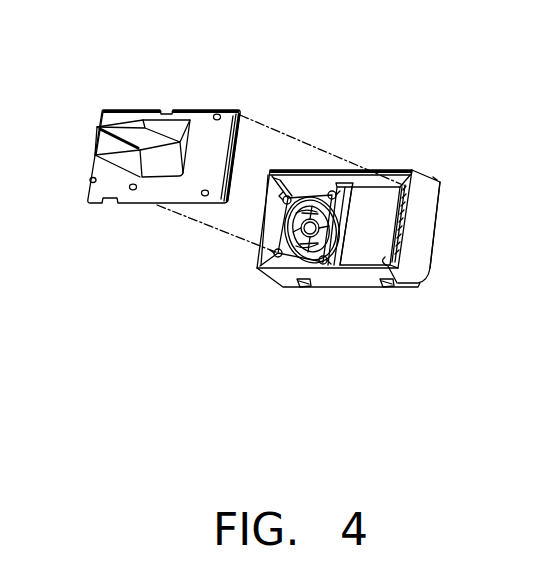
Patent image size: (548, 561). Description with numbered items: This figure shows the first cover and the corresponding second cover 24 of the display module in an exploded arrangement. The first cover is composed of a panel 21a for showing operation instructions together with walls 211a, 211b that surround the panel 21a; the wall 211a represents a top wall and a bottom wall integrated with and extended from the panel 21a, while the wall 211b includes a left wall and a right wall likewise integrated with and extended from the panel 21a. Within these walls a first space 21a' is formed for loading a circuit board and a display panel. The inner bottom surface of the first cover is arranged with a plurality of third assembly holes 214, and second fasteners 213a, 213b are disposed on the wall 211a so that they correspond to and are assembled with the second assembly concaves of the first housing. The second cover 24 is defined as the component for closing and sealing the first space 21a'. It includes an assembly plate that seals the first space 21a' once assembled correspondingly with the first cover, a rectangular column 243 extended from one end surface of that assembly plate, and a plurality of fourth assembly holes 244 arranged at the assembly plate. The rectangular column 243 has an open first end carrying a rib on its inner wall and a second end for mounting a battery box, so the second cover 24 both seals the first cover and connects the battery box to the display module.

The second cover 24 is at (155, 88).
The rectangular column 243 is at (117, 123).
The fourth assembly holes 244 is at (217, 113).
The panel 21a is at (375, 227).
The first space 21a' is at (328, 192).
The wall 211a is at (378, 170).
The wall 211b is at (428, 235).
The second fastener 213a is at (387, 290).
The second fastener 213b is at (302, 290).
The third assembly holes 214 is at (285, 197).